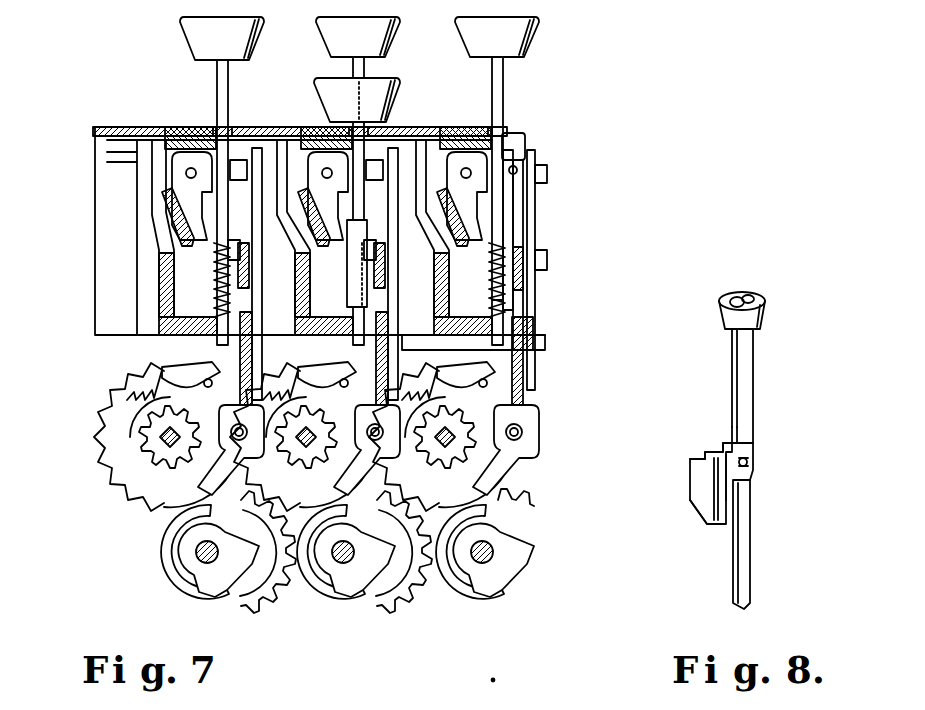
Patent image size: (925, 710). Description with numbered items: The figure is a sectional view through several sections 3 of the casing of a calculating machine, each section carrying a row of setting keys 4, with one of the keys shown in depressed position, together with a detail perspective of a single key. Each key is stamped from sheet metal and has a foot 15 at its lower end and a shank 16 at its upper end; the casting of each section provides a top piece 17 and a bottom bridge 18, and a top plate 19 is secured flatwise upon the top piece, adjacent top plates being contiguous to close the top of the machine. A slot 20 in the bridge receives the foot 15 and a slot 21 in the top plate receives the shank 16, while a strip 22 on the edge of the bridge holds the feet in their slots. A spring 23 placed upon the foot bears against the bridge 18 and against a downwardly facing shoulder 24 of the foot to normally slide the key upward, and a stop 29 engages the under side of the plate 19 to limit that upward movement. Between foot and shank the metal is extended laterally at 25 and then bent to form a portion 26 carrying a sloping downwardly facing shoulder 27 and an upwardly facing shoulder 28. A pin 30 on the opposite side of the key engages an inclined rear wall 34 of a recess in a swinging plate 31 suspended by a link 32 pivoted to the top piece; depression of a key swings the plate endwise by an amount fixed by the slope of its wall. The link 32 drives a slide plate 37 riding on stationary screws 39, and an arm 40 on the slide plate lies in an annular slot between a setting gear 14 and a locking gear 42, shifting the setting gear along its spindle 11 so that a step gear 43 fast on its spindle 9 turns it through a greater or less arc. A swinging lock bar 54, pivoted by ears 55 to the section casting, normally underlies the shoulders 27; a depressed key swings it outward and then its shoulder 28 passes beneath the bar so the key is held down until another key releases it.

In FIG. 7, the section 3 is at (135, 208).
In FIG. 7, the setting key 4 is at (354, 38).
In FIG. 8, the setting key 4 is at (765, 312).
In FIG. 7, the step gear spindle 9 is at (349, 570).
In FIG. 7, the setting gear spindle 11 is at (333, 438).
In FIG. 7, the setting gear 14 is at (162, 516).
In FIG. 7, the foot 15 is at (484, 333).
In FIG. 8, the foot 15 is at (748, 567).
In FIG. 7, the shank 16 is at (525, 178).
In FIG. 8, the shank 16 is at (752, 382).
In FIG. 7, the top piece 17 is at (318, 118).
In FIG. 7, the bottom bridge 18 is at (257, 346).
In FIG. 7, the top plate 19 is at (130, 128).
In FIG. 7, the slot 20 is at (220, 358).
In FIG. 7, the slot 21 is at (208, 112).
In FIG. 7, the strip 22 is at (506, 353).
In FIG. 7, the spring 23 is at (548, 280).
In FIG. 8, the downwardly facing shoulder 24 is at (753, 470).
In FIG. 8, the lateral extension 25 is at (722, 464).
In FIG. 7, the bent portion 26 is at (556, 230).
In FIG. 8, the bent portion 26 is at (698, 480).
In FIG. 8, the downwardly facing shoulder 27 is at (695, 512).
In FIG. 8, the upwardly facing shoulder 28 is at (698, 450).
In FIG. 8, the stop 29 is at (730, 425).
In FIG. 7, the pin 30 is at (550, 159).
In FIG. 8, the pin 30 is at (748, 462).
In FIG. 7, the swinging plate 31 is at (558, 262).
In FIG. 7, the link 32 is at (581, 270).
In FIG. 7, the rear wall 34 is at (543, 255).
In FIG. 7, the slide plate 37 is at (556, 380).
In FIG. 7, the stationary screw 39 is at (557, 333).
In FIG. 7, the arm 40 is at (543, 450).
In FIG. 7, the locking gear 42 is at (115, 441).
In FIG. 7, the step gear 43 is at (419, 570).
In FIG. 7, the swinging lock bar 54 is at (268, 232).
In FIG. 7, the ear 55 is at (326, 164).